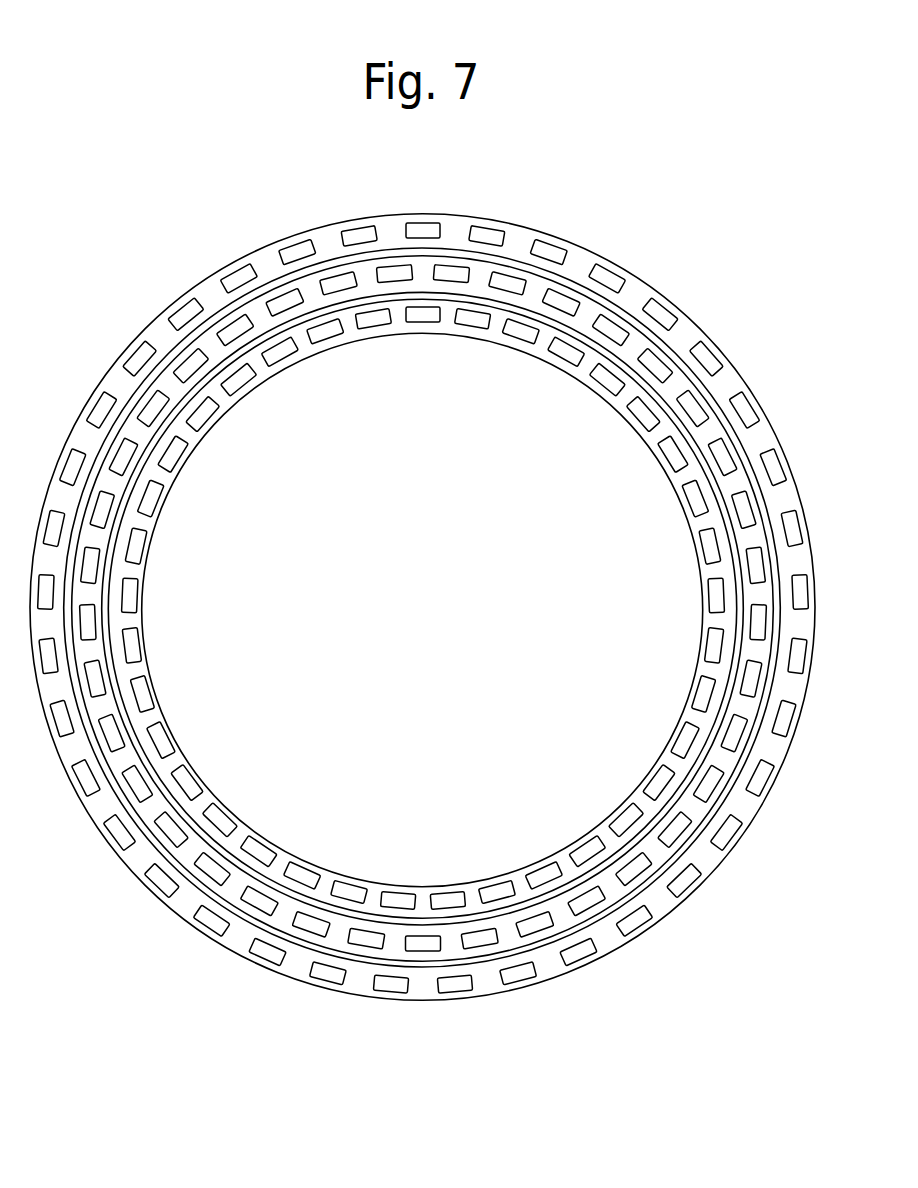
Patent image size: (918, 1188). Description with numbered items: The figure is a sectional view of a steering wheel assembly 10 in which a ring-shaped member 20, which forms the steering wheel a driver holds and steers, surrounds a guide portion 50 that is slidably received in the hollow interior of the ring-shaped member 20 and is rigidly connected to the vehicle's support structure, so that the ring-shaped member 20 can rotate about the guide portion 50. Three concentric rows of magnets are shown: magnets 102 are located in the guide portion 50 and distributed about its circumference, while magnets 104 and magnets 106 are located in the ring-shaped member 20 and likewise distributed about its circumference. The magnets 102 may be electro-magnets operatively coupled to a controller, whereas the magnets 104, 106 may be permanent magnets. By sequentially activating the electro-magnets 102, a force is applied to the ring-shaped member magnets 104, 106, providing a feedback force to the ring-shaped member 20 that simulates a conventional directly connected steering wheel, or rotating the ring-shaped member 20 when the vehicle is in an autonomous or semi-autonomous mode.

The steering wheel assembly 10 is at (670, 940).
The ring-shaped member 20 is at (322, 237).
The guide portion 50 is at (424, 279).
The magnets 102 is at (507, 278).
The magnets 104 is at (553, 250).
The magnets 106 is at (523, 334).